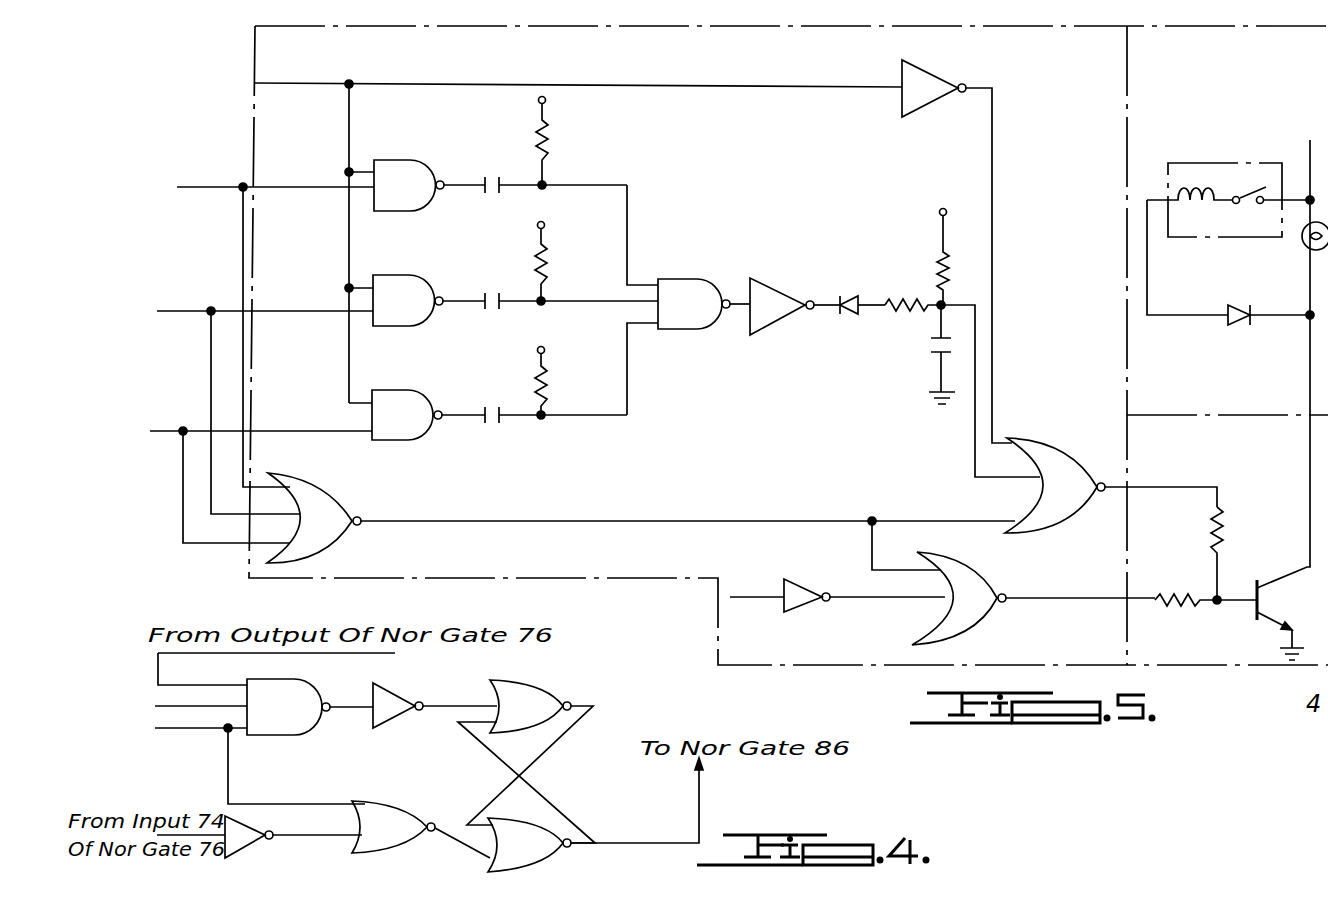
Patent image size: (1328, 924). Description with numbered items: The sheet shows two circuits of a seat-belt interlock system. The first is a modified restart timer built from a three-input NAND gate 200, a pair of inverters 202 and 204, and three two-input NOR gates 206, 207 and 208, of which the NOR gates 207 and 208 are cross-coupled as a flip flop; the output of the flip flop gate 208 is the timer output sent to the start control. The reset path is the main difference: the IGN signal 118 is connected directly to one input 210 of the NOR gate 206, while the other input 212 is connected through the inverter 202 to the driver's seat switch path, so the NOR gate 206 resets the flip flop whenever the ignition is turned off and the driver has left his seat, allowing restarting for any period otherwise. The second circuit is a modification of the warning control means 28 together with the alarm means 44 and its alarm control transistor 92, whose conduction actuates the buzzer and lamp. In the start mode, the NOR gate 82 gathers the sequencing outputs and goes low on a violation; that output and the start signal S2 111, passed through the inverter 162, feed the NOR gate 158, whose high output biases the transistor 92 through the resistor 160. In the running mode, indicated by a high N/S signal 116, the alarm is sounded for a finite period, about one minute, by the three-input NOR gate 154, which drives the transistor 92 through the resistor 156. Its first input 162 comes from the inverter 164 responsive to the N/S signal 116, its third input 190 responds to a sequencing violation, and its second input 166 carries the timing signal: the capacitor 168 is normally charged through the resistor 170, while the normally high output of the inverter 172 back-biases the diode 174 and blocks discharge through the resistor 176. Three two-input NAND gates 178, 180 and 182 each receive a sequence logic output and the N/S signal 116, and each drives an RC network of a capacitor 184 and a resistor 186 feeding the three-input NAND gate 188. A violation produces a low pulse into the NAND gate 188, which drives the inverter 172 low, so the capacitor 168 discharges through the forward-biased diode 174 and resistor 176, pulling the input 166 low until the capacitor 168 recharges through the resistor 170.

In FIG. 5, the N/S signal 116 is at (288, 66).
In FIG. 5, the IGN signal 118 is at (1295, 243).
In FIG. 4, the IGN signal 118 is at (163, 715).
In FIG. 5, the two-input NAND gate 182 is at (405, 158).
In FIG. 5, the two-input NAND gate 180 is at (405, 273).
In FIG. 5, the two-input NAND gate 178 is at (405, 388).
In FIG. 5, the capacitor 184 is at (502, 158).
In FIG. 5, the resistor 186 is at (549, 150).
In FIG. 5, the three-input NAND gate 188 is at (696, 278).
In FIG. 5, the inverter 172 is at (786, 292).
In FIG. 5, the diode 174 is at (851, 296).
In FIG. 5, the resistor 176 is at (903, 292).
In FIG. 5, the resistor 170 is at (955, 268).
In FIG. 5, the capacitor 168 is at (933, 343).
In FIG. 5, the inverter 164 is at (940, 75).
In FIG. 5, the inverter 162 is at (1010, 438).
In FIG. 5, the second input of NOR gate 154 166 is at (1010, 472).
In FIG. 5, the third input of NOR gate 154 190 is at (955, 522).
In FIG. 5, the NOR gate 154 is at (1060, 450).
In FIG. 5, the NOR gate 158 is at (980, 574).
In FIG. 5, the NOR gate 82 is at (338, 500).
In FIG. 5, the start signal S2 111 is at (757, 573).
In FIG. 4, the start signal S2 111 is at (180, 696).
In FIG. 5, the resistor 156 is at (1228, 527).
In FIG. 5, the resistor 160 is at (1170, 605).
In FIG. 5, the alarm control transistor 92 is at (1290, 543).
In FIG. 5, the warning control means 28 is at (1060, 30).
In FIG. 5, the alarm means 44 is at (1250, 30).
In FIG. 4, the three-input NAND gate 200 is at (295, 737).
In FIG. 4, the inverter 202 is at (242, 853).
In FIG. 4, the inverter 204 is at (387, 725).
In FIG. 4, the two-input NOR gate 206 is at (396, 848).
In FIG. 4, the NOR gate 207 is at (543, 688).
In FIG. 4, the NOR gate 208 is at (543, 862).
In FIG. 4, the input of NOR gate 206 210 is at (333, 800).
In FIG. 4, the input of NOR gate 206 212 is at (340, 838).